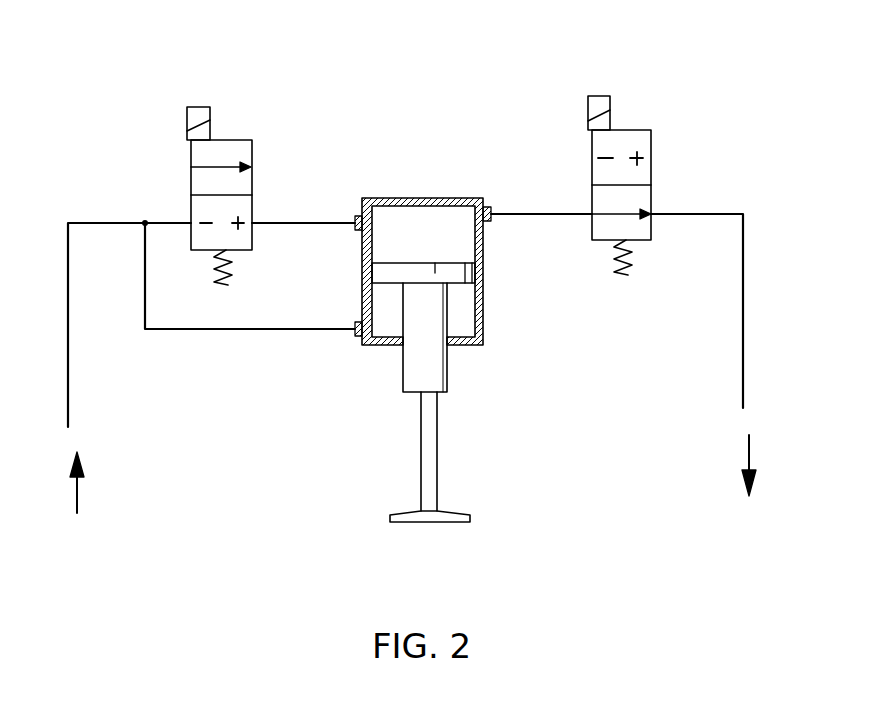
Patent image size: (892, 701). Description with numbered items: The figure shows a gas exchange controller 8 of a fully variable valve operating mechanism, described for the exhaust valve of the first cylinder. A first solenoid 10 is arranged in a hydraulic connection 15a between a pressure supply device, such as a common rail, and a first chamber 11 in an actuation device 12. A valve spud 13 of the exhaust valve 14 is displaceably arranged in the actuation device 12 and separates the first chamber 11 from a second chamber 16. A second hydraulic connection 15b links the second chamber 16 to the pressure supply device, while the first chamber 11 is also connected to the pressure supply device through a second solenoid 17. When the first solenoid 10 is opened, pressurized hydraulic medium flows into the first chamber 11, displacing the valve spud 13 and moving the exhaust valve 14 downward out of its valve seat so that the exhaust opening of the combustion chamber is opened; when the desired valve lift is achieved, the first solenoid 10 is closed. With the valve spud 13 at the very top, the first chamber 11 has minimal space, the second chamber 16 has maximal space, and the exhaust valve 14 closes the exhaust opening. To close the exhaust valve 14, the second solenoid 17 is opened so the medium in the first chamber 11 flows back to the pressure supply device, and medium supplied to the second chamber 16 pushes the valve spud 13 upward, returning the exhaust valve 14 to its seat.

The gas exchange controller 8 is at (412, 308).
The first solenoid 10 is at (200, 107).
The first chamber 11 is at (398, 198).
The actuation device 12 is at (357, 338).
The valve spud 13 is at (456, 262).
The exhaust valve 14 is at (416, 523).
The hydraulic connection 15a is at (306, 222).
The second hydraulic connection 15b is at (215, 331).
The second chamber 16 is at (463, 315).
The second solenoid 17 is at (651, 130).